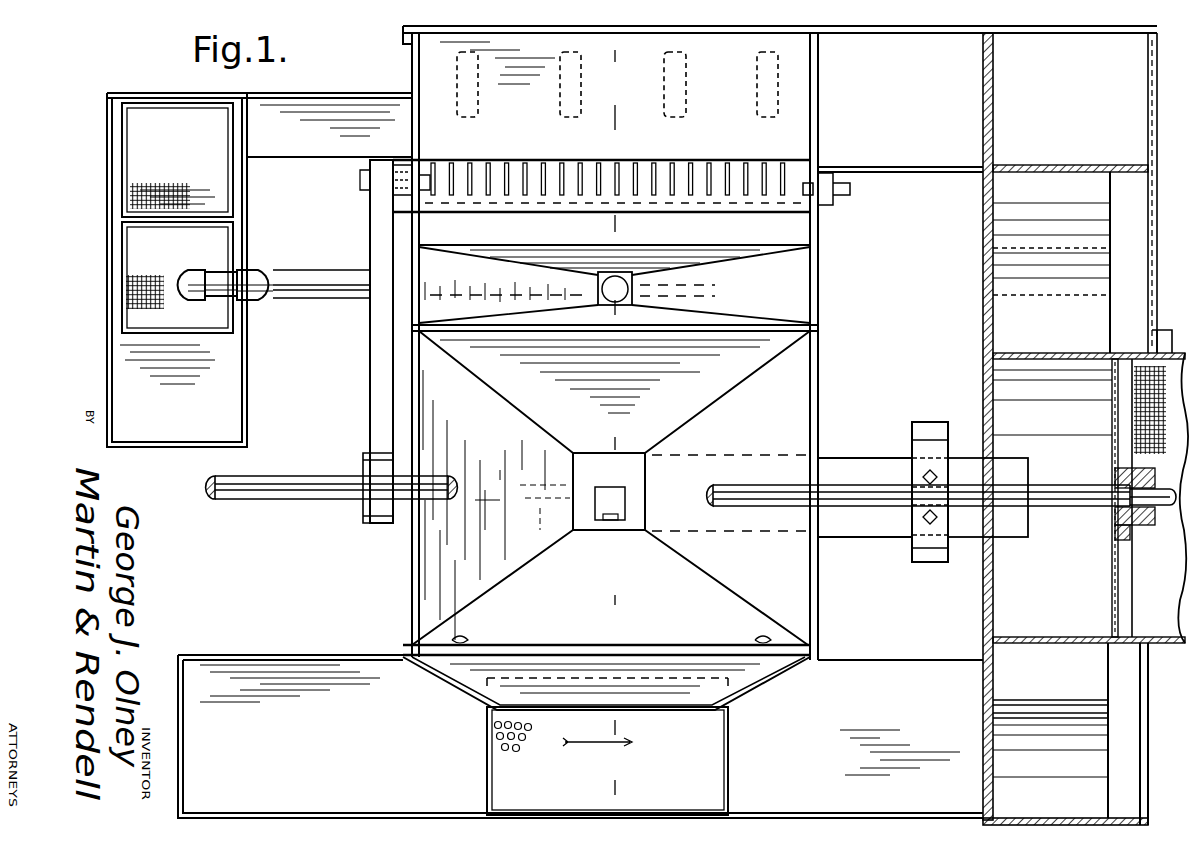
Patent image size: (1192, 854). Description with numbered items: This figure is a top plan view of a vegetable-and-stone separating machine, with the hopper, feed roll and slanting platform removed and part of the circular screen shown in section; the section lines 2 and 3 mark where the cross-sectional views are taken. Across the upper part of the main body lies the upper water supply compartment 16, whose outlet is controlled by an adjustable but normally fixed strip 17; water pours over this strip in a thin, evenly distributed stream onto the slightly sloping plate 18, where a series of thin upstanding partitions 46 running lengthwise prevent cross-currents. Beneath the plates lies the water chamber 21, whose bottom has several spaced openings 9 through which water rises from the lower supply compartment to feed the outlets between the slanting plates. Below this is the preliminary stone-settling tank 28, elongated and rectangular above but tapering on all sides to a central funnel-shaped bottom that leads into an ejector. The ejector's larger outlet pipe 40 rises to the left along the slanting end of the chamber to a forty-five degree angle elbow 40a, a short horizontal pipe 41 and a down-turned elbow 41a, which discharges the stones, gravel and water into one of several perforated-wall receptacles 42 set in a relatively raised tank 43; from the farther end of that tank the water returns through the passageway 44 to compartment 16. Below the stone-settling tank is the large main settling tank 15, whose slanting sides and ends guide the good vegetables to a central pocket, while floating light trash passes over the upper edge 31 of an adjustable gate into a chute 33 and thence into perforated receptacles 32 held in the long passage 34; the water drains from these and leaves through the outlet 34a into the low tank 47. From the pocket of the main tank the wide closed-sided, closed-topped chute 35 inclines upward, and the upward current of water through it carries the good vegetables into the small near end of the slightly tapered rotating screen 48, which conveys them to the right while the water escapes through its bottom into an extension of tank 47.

The casing 2 is at (619, 24).
The shaft 3 is at (203, 481).
The spaced openings 9 is at (470, 88).
The main settling tank 15 is at (615, 485).
The upper water supply compartment 16 is at (601, 171).
The adjustable but normally fixed strip 17 is at (656, 165).
The slightly sloping plate 18 is at (657, 198).
The water chamber 21 is at (614, 233).
The stone-settling tank 28 is at (614, 285).
The upper edge of adjustable gate 31 is at (562, 648).
The receptacles 32 is at (607, 761).
The chute 33 is at (606, 683).
The passage 34 is at (580, 736).
The outlet 34a is at (978, 690).
The closed chute 35 is at (758, 470).
The outlet pipe 40 is at (350, 284).
The angle elbow 40a is at (255, 280).
The short horizontal pipe 41 is at (222, 282).
The down-turned elbow 41a is at (186, 278).
The perforated-wall receptacles 42 is at (145, 268).
The tank 43 is at (118, 340).
The passageway 44 is at (259, 125).
The upstanding partitions 46 is at (510, 183).
The tank 47 is at (990, 815).
The rotating screen 48 is at (1135, 648).